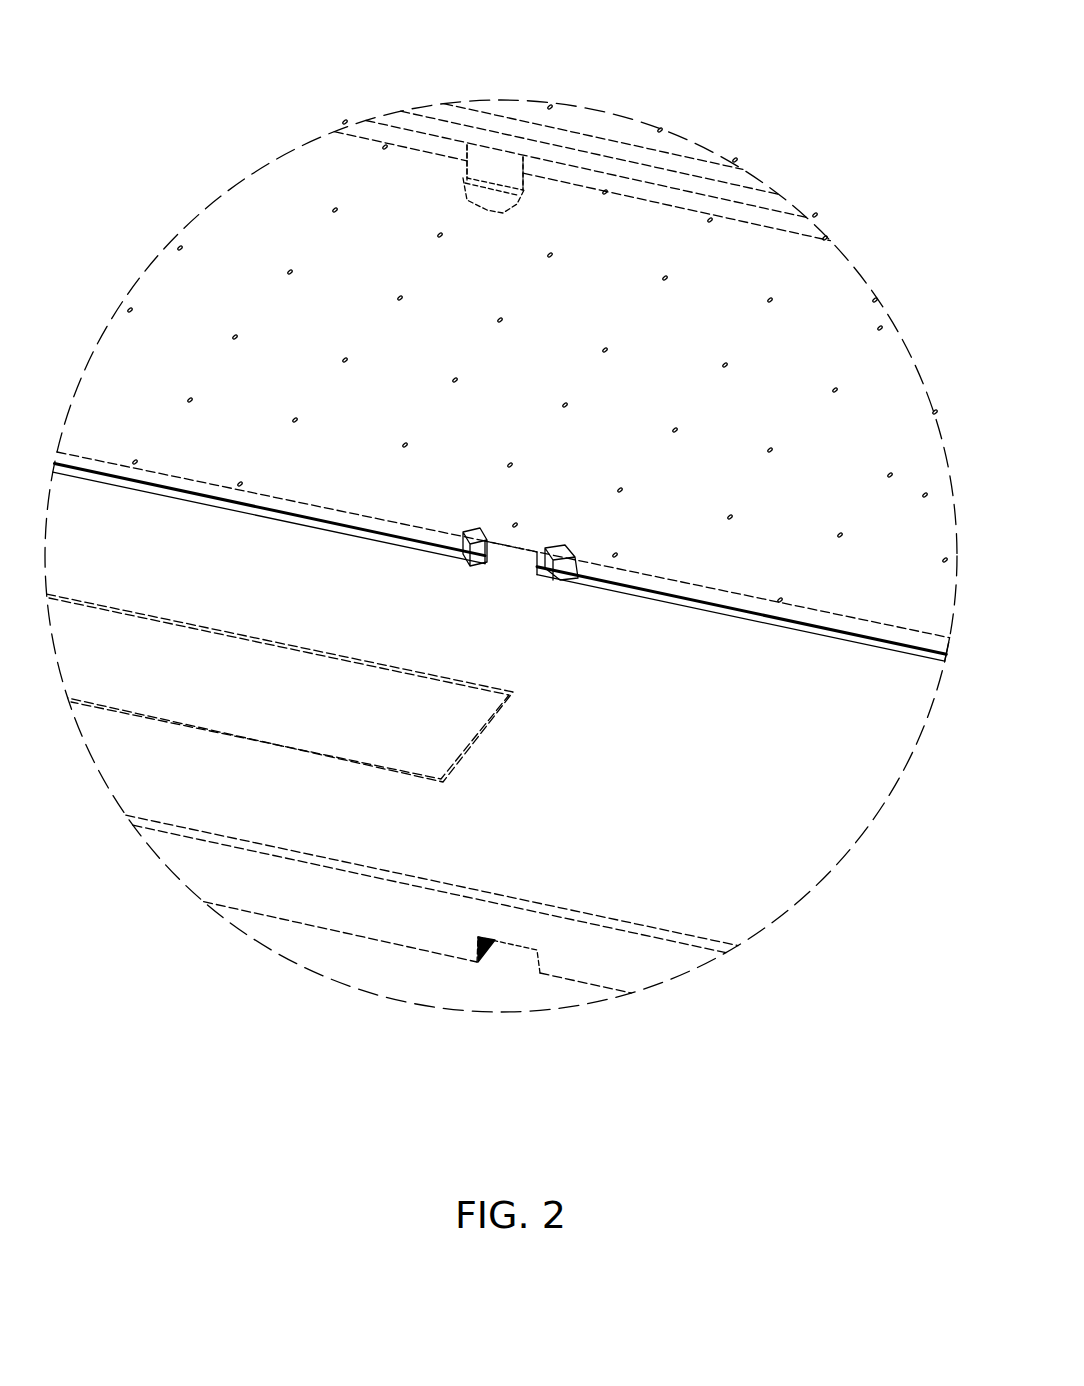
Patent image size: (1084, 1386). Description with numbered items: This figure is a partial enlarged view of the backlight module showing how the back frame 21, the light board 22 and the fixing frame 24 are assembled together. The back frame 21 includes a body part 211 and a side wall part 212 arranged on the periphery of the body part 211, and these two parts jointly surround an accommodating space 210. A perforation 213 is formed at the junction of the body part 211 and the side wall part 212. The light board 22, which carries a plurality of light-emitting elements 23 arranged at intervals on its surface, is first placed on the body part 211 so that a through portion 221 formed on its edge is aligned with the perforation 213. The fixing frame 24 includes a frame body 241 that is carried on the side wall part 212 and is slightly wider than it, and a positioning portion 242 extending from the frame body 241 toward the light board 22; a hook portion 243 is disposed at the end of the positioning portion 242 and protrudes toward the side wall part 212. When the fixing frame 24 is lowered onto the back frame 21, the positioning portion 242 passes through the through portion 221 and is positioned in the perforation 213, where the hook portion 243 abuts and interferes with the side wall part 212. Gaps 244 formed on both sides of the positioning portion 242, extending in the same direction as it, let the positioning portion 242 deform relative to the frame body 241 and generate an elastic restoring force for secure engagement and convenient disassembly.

The back frame 21 is at (300, 933).
The accommodating space 210 is at (786, 880).
The body part 211 is at (762, 905).
The side wall part 212 is at (666, 963).
The perforation 213 is at (507, 952).
The light board 22 is at (158, 300).
The through portion 221 is at (505, 557).
The light-emitting element 23 is at (472, 540).
The fixing frame 24 is at (795, 198).
The frame body 241 is at (618, 150).
The positioning portion 242 is at (493, 163).
The hook portion 243 is at (445, 197).
The gap 244 is at (462, 147).